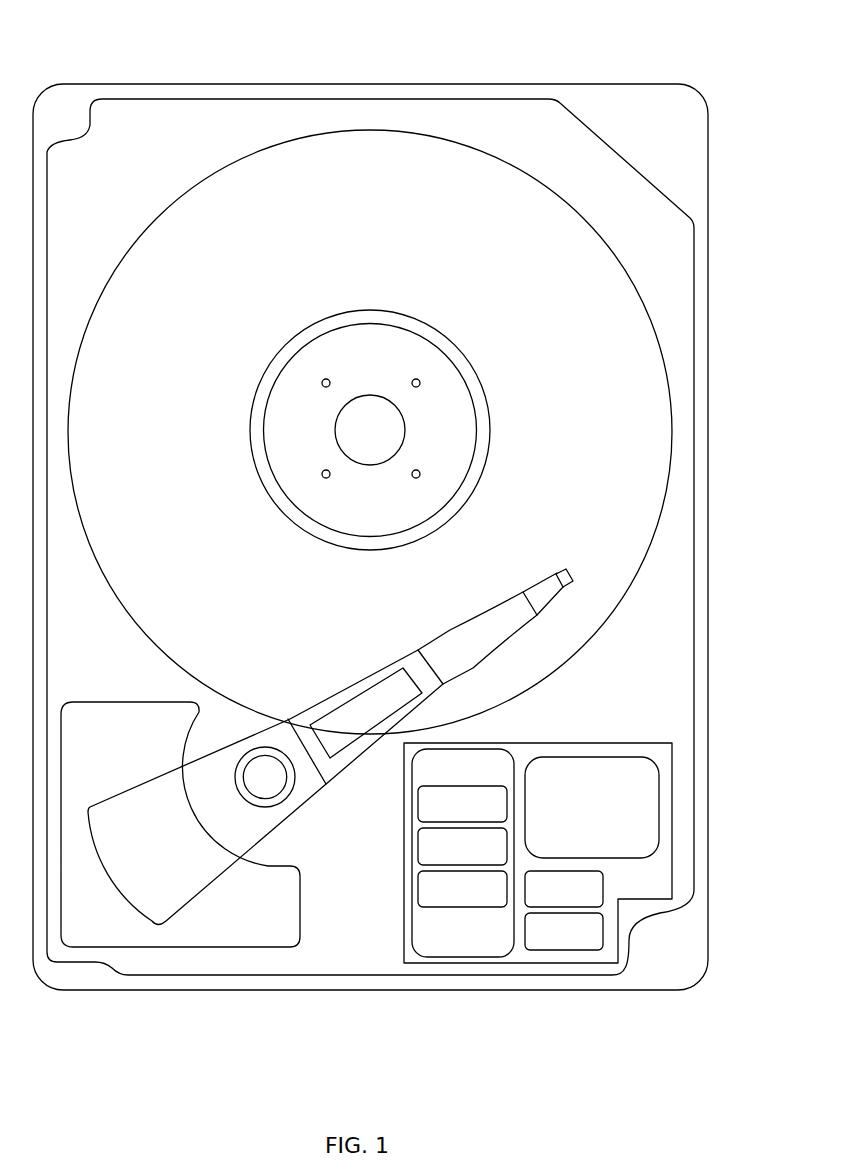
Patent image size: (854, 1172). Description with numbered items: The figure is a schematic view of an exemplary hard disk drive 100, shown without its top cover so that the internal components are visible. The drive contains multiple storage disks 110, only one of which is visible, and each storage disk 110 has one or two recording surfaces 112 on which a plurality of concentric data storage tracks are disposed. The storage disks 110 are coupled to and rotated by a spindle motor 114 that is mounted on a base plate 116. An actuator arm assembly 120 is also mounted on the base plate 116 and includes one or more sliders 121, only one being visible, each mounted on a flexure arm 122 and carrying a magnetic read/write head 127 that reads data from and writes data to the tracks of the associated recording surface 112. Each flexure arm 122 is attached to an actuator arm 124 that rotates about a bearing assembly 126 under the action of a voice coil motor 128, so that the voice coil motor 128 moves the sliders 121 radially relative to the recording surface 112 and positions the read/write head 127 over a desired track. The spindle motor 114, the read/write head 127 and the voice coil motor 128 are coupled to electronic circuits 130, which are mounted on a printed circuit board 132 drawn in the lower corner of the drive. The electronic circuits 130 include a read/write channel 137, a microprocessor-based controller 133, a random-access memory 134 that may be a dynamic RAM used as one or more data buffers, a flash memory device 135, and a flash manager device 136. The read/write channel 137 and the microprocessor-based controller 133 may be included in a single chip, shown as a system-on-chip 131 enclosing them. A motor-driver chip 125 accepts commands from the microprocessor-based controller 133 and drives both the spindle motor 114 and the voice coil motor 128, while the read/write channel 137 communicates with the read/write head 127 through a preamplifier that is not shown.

The hard disk drive 100 is at (121, 48).
The storage disk 110 is at (152, 223).
The recording surface 112 is at (370, 428).
The spindle motor 114 is at (461, 372).
The base plate 116 is at (695, 562).
The actuator arm assembly 120 is at (314, 655).
The slider 121 is at (571, 574).
The flexure arm 122 is at (538, 582).
The actuator arm 124 is at (437, 639).
The motor-driver chip 125 is at (544, 900).
The bearing assembly 126 is at (292, 819).
The magnetic read/write head 127 is at (603, 499).
The voice coil motor 128 is at (301, 893).
The electronic circuits 130 is at (547, 742).
The system-on-chip 131 is at (443, 782).
The printed circuit board 132 is at (612, 743).
The microprocessor-based controller 133 is at (443, 817).
The random-access memory 134 is at (544, 942).
The flash memory device 135 is at (572, 819).
The flash manager device 136 is at (443, 860).
The read/write channel 137 is at (443, 902).